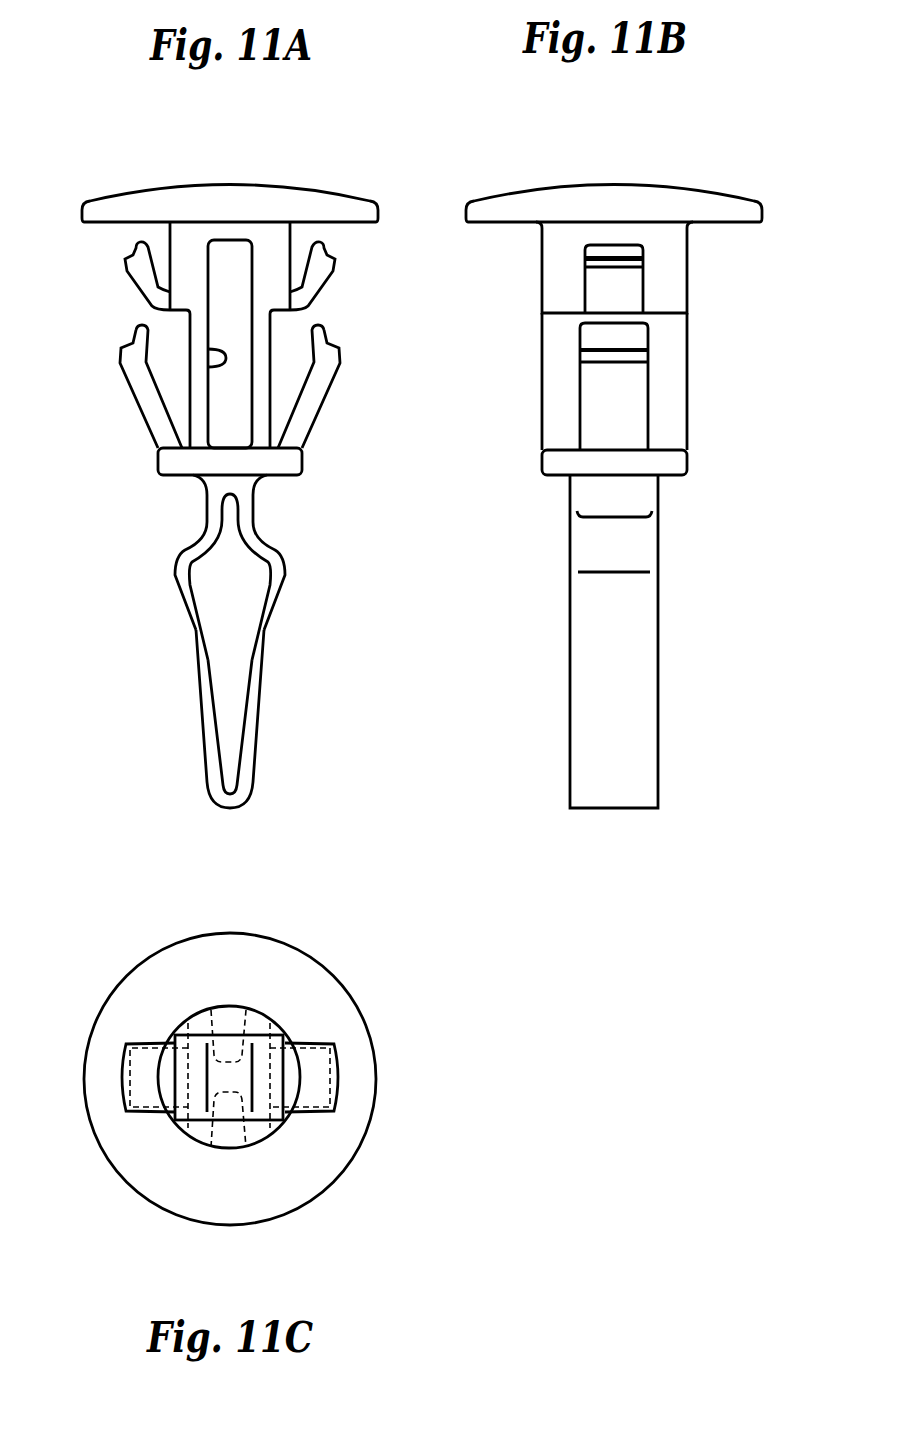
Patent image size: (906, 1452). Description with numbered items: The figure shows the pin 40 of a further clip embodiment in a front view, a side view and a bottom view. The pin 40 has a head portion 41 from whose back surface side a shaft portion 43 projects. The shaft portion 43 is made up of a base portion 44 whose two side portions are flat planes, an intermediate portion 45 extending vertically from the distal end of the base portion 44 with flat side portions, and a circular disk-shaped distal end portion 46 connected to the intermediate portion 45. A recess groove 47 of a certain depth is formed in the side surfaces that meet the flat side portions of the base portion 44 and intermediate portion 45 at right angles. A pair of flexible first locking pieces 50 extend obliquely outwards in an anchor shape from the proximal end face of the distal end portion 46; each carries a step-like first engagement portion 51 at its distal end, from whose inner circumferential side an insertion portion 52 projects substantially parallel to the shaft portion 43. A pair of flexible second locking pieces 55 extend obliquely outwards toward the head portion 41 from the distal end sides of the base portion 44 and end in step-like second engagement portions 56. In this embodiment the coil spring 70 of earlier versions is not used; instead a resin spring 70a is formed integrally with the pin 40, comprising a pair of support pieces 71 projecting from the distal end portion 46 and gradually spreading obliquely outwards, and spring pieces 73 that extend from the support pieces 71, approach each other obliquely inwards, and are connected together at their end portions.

In FIG. 11A, the pin 40 is at (322, 182).
In FIG. 11B, the pin 40 is at (677, 183).
In FIG. 11C, the pin 40 is at (338, 972).
In FIG. 11A, the head portion 41 is at (158, 208).
In FIG. 11B, the head portion 41 is at (510, 208).
In FIG. 11C, the head portion 41 is at (348, 1012).
In FIG. 11A, the shaft portion 43 is at (278, 327).
In FIG. 11B, the shaft portion 43 is at (698, 327).
In FIG. 11A, the base portion 44 is at (278, 240).
In FIG. 11B, the base portion 44 is at (677, 260).
In FIG. 11A, the intermediate portion 45 is at (265, 377).
In FIG. 11B, the intermediate portion 45 is at (672, 377).
In FIG. 11A, the distal end portion 46 is at (293, 460).
In FIG. 11B, the distal end portion 46 is at (677, 463).
In FIG. 11C, the distal end portion 46 is at (257, 1022).
In FIG. 11A, the recess groove 47 is at (210, 367).
In FIG. 11A, the first locking piece 50 is at (140, 407).
In FIG. 11C, the first locking piece 50 is at (122, 1050).
In FIG. 11A, the first engagement portion 51 is at (333, 343).
In FIG. 11B, the first engagement portion 51 is at (583, 348).
In FIG. 11A, the insertion portion 52 is at (320, 333).
In FIG. 11B, the insertion portion 52 is at (587, 337).
In FIG. 11A, the second locking piece 55 is at (137, 275).
In FIG. 11B, the second locking piece 55 is at (593, 283).
In FIG. 11A, the second engagement portion 56 is at (333, 250).
In FIG. 11B, the second engagement portion 56 is at (592, 412).
In FIG. 11C, the coil spring 70 is at (257, 1125).
In FIG. 11A, the resin spring 70a is at (293, 590).
In FIG. 11B, the resin spring 70a is at (693, 591).
In FIG. 11A, the support piece 71 is at (198, 537).
In FIG. 11B, the support piece 71 is at (648, 540).
In FIG. 11C, the support piece 71 is at (262, 1092).
In FIG. 11A, the spring piece 73 is at (197, 633).
In FIG. 11B, the spring piece 73 is at (648, 675).